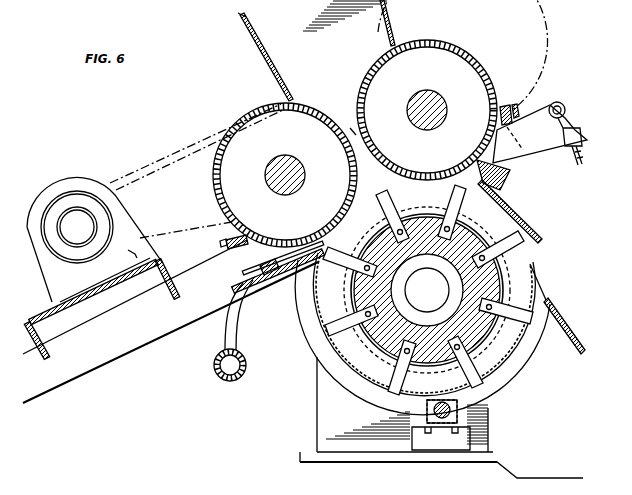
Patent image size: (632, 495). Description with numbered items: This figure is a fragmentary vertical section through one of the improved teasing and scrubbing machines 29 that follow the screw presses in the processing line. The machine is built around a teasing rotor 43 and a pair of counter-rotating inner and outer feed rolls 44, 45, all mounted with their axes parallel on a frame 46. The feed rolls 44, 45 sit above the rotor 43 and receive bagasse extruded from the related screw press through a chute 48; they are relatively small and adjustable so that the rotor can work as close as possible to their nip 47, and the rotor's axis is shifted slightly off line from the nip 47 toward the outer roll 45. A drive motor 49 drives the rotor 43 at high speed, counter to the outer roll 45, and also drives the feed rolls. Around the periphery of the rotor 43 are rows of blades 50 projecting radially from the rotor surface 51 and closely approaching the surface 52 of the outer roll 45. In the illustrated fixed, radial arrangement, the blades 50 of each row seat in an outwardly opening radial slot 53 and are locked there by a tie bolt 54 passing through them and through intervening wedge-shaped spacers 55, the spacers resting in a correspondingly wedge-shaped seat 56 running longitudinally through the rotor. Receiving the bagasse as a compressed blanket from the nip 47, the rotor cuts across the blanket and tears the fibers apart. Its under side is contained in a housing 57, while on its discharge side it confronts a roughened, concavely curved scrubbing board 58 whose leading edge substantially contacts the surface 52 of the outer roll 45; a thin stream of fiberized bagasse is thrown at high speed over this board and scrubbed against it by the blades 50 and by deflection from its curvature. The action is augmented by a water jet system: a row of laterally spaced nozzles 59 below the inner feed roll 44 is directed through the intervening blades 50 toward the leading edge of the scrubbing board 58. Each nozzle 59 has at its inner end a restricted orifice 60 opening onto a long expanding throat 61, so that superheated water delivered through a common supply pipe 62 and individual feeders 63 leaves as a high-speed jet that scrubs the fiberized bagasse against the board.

The teasing and scrubbing machine 29 is at (569, 107).
The teasing rotor 43 is at (444, 290).
The inner feed roll 44 is at (213, 184).
The outer feed roll 45 is at (445, 90).
The frame 46 is at (120, 358).
The nip 47 is at (347, 125).
The chute 48 is at (251, 43).
The drive motor 49 is at (75, 178).
The blades 50 is at (506, 237).
The rotor surface 51 is at (503, 287).
The outer roll surface 52 is at (372, 66).
The radial slot 53 is at (449, 232).
The tie bolt 54 is at (369, 311).
The spacers 55 is at (370, 264).
The wedge-shaped seat 56 is at (482, 262).
The housing 57 is at (308, 322).
The scrubbing board 58 is at (515, 214).
The nozzles 59 is at (290, 267).
The restricted orifice 60 is at (268, 283).
The throat 61 is at (262, 270).
The supply pipe 62 is at (214, 365).
The feeders 63 is at (238, 326).